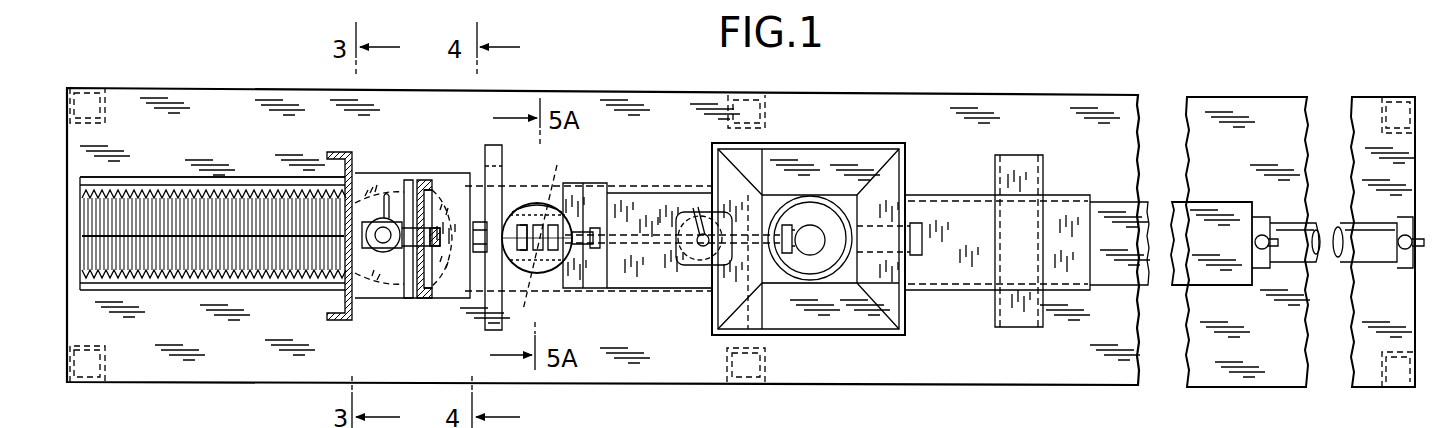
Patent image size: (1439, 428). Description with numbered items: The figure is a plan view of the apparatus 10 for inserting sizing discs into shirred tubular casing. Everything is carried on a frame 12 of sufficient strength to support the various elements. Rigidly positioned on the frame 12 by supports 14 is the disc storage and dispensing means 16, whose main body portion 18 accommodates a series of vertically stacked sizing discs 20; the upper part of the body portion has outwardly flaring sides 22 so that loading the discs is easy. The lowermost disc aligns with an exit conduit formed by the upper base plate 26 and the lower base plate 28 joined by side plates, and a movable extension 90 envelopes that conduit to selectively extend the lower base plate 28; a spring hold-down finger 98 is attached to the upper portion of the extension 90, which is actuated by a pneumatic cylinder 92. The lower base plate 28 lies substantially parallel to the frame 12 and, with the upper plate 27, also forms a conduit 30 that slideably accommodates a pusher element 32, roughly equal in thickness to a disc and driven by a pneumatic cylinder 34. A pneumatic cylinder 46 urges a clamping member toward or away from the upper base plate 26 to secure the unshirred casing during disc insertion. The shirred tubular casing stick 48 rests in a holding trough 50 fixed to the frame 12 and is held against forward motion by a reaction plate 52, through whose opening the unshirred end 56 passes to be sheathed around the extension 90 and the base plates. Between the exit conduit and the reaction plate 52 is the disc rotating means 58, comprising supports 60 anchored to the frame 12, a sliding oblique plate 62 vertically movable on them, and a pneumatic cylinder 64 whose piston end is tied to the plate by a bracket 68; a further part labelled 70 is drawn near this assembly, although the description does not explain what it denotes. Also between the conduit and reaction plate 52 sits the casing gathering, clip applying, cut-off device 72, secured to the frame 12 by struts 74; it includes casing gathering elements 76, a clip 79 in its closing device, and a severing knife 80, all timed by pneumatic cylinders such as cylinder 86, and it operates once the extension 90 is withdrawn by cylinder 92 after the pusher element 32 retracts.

The apparatus 10 is at (954, 90).
The frame 12 is at (783, 372).
The supports 14 is at (762, 310).
The disc storage and dispensing means 16 is at (838, 308).
The main body portion 18 is at (823, 185).
The sizing discs 20 is at (828, 225).
The outwardly flaring sides 22 is at (866, 157).
The upper base plate 26 is at (637, 200).
The upper plate 27 is at (966, 216).
The lower base plate 28 is at (783, 196).
The conduit 30 is at (1095, 201).
The pusher element 32 is at (1213, 208).
The pneumatic cylinder 34 is at (1382, 255).
The pneumatic cylinder 46 is at (697, 262).
The shirred tubular casing stick 48 is at (234, 186).
The holding trough 50 is at (152, 178).
The reaction plate 52 is at (350, 157).
The unshirred end 56 is at (662, 292).
The disc rotating means 58 is at (397, 160).
The supports 60 is at (424, 178).
The sliding oblique plate 62 is at (421, 212).
The pneumatic cylinder 64 is at (383, 252).
The bracket 68 is at (371, 250).
The cover 70 is at (452, 250).
The casing gathering, clip applying, cut-off device 72 is at (567, 268).
The struts 74 is at (495, 152).
The casing gathering elements 76 is at (518, 280).
The clip 79 is at (552, 224).
The severing knife 80 is at (597, 261).
The pneumatic cylinder 86 is at (534, 208).
The movable extension 90 is at (549, 281).
The pneumatic cylinder 92 is at (878, 252).
The spring hold-down finger 98 is at (592, 200).